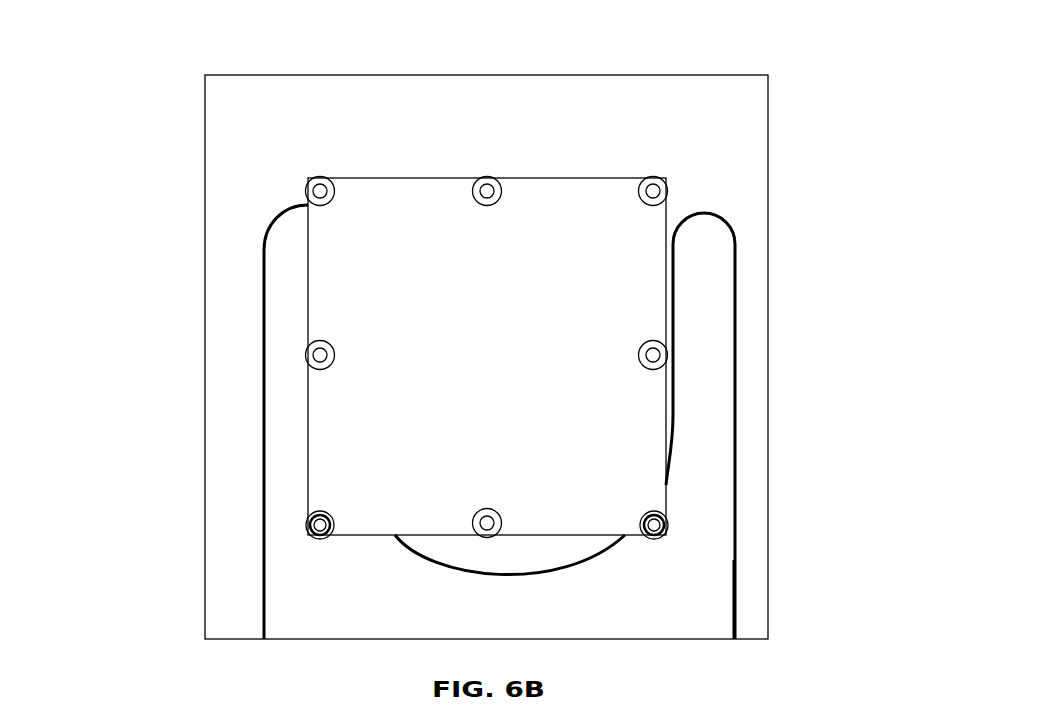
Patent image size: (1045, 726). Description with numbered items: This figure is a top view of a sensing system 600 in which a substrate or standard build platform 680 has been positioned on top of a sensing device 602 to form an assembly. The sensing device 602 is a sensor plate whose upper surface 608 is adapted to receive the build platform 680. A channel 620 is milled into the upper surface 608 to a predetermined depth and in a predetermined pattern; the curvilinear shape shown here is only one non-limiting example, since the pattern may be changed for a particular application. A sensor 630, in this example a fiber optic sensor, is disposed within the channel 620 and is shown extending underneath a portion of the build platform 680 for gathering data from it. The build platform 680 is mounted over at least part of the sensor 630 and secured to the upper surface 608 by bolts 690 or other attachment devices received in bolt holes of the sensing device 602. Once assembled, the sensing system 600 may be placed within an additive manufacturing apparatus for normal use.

The sensing system 600 is at (160, 178).
The sensing device 602 is at (766, 150).
The upper surface 608 is at (510, 137).
The channel 620 is at (736, 512).
The sensor 630 is at (735, 355).
The build platform 680 is at (513, 368).
The bolts 690 is at (306, 535).